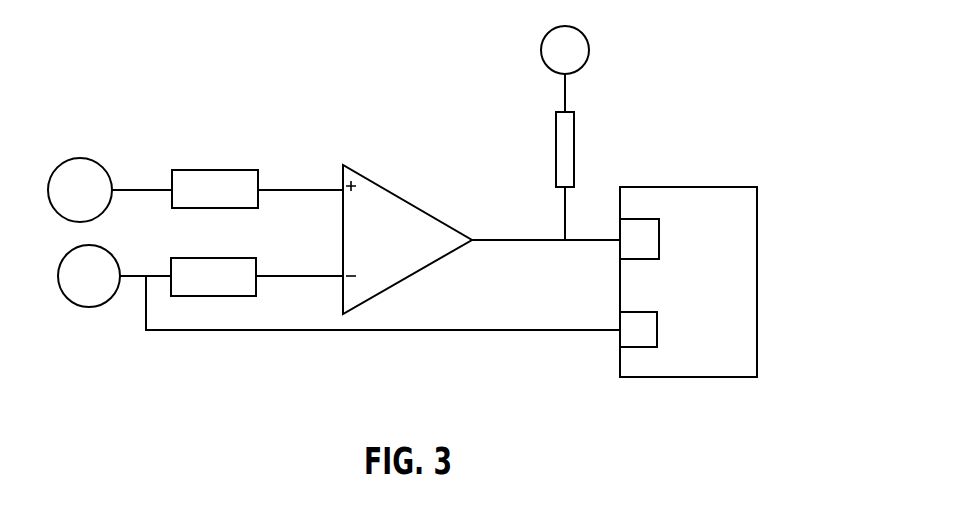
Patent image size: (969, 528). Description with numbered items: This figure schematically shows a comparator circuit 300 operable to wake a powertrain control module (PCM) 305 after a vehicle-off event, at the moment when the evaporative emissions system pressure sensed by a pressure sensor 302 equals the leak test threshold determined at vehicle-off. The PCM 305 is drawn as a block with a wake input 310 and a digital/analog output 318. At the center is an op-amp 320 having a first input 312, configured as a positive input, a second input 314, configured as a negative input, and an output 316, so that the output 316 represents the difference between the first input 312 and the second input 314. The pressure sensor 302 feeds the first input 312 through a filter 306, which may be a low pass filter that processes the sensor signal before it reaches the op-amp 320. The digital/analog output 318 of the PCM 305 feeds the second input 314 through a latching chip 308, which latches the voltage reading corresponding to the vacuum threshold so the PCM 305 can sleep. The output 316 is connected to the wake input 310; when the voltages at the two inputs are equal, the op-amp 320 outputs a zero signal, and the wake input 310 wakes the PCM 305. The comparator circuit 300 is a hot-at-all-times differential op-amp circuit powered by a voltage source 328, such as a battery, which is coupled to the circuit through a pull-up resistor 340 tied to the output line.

The comparator circuit 300 is at (699, 66).
The pressure sensor 302 is at (80, 190).
The powertrain control module 305 is at (407, 282).
The filter 306 is at (215, 189).
The latching chip 308 is at (213, 277).
The wake input 310 is at (639, 239).
The first input 312 is at (342, 191).
The second input 314 is at (342, 277).
The output 316 is at (475, 233).
The digital/analog output 318 is at (638, 329).
The op-amp 320 is at (407, 239).
The voltage source 328 is at (565, 50).
The pull-up resistor 340 is at (574, 131).